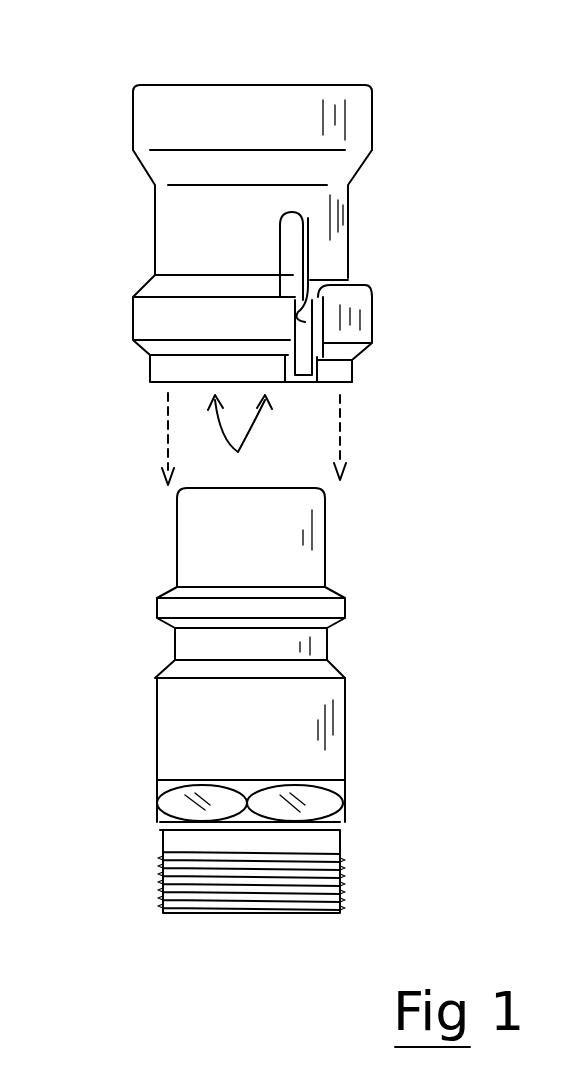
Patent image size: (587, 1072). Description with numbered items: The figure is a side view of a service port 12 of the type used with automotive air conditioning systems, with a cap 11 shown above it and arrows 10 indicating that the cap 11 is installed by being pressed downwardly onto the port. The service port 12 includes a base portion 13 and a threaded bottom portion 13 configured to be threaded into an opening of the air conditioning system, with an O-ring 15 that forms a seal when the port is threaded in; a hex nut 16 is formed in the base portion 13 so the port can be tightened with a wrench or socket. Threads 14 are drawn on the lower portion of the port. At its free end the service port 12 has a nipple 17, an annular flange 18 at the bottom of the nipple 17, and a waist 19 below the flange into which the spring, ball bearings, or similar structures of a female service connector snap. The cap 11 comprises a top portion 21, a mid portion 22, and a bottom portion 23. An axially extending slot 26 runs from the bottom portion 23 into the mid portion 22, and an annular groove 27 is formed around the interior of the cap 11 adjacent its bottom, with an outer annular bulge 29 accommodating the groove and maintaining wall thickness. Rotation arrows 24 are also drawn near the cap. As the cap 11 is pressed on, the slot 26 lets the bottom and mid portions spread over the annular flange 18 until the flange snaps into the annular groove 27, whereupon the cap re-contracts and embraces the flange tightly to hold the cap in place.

The arrows 10 is at (393, 447).
The cap 11 is at (503, 181).
The service port 12 is at (437, 606).
The base portion 13 is at (345, 765).
The threads 14 is at (343, 878).
The O-ring 15 is at (170, 838).
The hex nut 16 is at (343, 805).
The nipple 17 is at (190, 537).
The annular flange 18 is at (165, 607).
The waist 19 is at (180, 645).
The top portion 21 is at (386, 75).
The mid portion 22 is at (381, 243).
The bottom portion 23 is at (381, 382).
The rotation arrows 24 is at (253, 431).
The axial slot 26 is at (300, 320).
The annular groove 27 is at (362, 288).
The outer annular bulge 29 is at (133, 318).